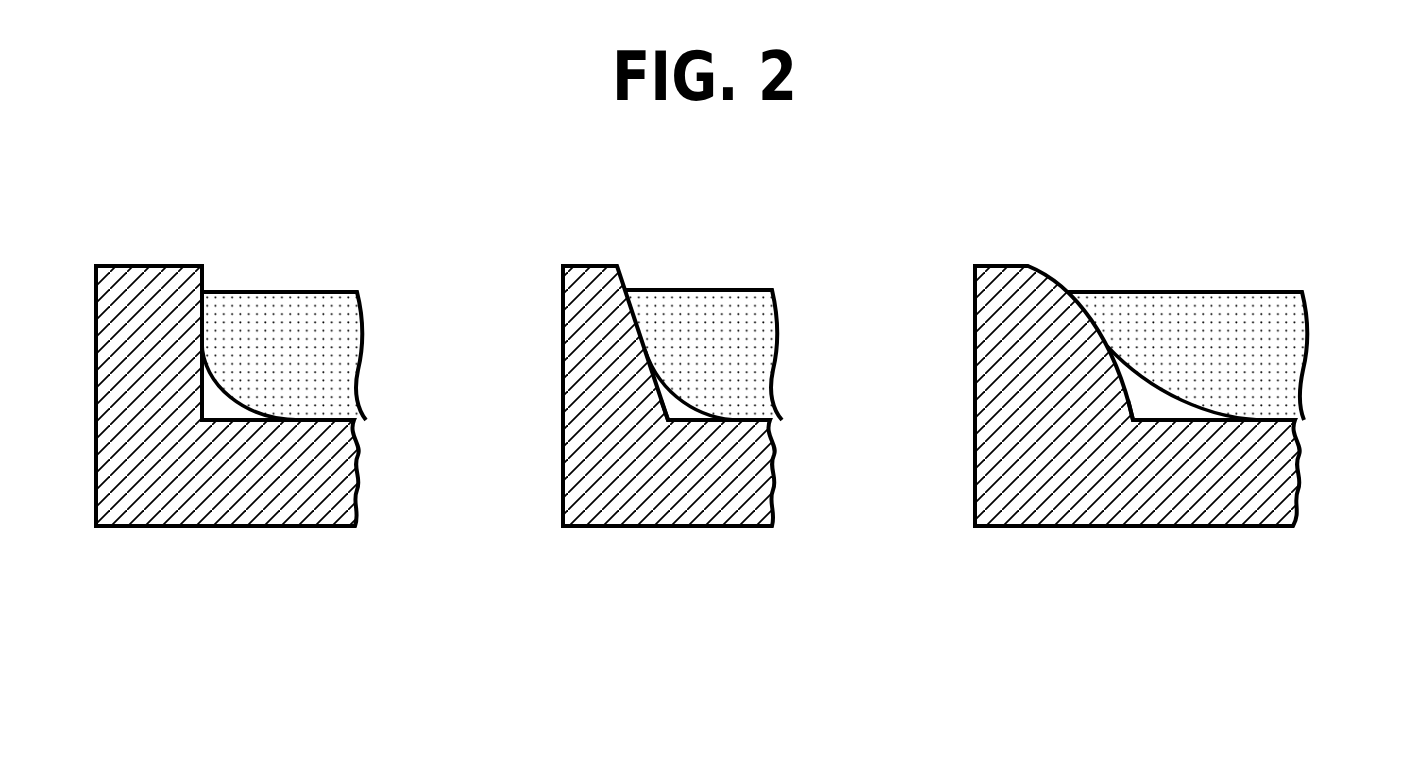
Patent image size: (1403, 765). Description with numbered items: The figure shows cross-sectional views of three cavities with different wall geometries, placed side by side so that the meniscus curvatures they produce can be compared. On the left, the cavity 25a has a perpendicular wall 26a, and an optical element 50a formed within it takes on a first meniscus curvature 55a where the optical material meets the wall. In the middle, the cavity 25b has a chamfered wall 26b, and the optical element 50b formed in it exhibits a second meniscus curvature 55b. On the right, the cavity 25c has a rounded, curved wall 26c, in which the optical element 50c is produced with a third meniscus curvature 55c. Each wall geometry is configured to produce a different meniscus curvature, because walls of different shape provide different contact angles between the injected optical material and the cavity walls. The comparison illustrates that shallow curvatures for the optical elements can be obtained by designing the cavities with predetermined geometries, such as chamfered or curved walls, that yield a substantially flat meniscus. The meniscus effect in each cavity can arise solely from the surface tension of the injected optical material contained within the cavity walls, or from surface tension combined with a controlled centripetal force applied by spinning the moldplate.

The cavity 25a is at (195, 527).
The cavity 25b is at (707, 527).
The cavity 25c is at (1145, 527).
The optical element 50a is at (300, 315).
The optical element 50b is at (743, 315).
The optical element 50c is at (1237, 322).
The first meniscus curvature 55a is at (220, 367).
The second meniscus curvature 55b is at (665, 375).
The third meniscus curvature 55c is at (1150, 367).
The perpendicular wall 26a is at (207, 408).
The chamfered wall 26b is at (663, 407).
The rounded wall 26c is at (1137, 407).